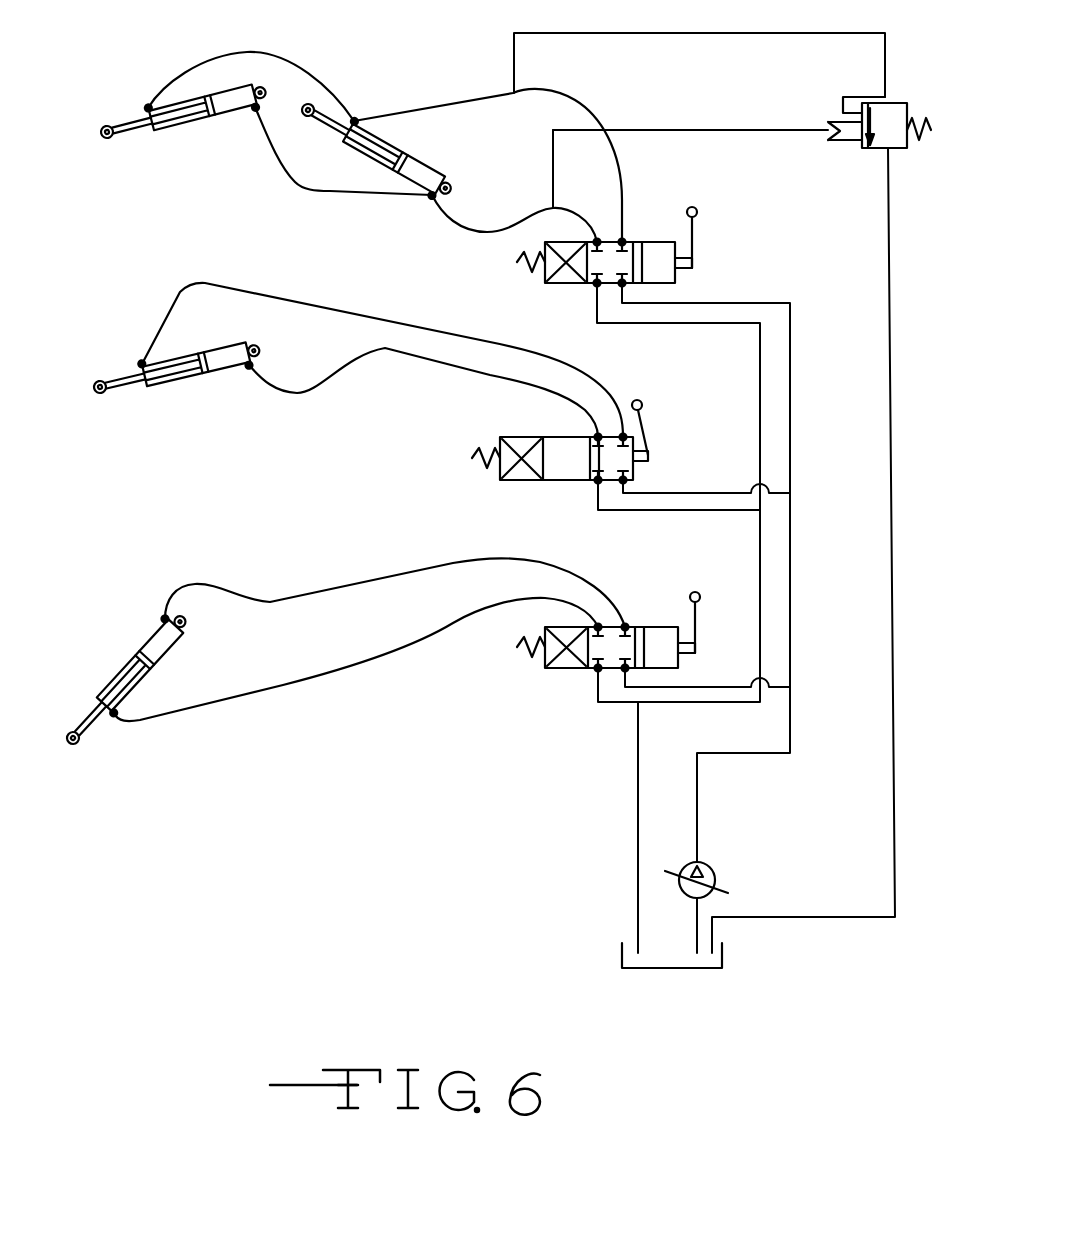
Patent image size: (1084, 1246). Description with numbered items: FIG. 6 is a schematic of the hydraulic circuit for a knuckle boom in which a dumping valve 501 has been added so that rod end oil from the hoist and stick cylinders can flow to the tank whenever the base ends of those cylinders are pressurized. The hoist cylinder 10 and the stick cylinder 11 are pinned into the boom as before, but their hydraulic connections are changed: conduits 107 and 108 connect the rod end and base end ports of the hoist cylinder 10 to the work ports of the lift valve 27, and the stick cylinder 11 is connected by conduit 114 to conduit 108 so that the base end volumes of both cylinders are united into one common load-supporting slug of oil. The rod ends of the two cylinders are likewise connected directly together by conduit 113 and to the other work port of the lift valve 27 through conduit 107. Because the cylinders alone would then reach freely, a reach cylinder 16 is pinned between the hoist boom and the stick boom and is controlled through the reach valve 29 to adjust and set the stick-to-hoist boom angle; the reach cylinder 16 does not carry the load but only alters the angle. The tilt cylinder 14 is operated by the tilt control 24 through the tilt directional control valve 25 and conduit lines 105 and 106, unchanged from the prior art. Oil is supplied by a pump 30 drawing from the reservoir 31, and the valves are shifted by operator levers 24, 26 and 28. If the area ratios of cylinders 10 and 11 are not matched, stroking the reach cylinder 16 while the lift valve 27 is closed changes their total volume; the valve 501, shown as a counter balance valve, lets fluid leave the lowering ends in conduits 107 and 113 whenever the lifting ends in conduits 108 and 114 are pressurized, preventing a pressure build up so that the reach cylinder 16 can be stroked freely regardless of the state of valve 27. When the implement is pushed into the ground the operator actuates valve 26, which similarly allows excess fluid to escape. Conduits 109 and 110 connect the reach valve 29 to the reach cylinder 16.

The hoist cylinder 10 is at (423, 160).
The stick cylinder 11 is at (188, 127).
The tilt cylinder 14 is at (90, 725).
The reach cylinder 16 is at (170, 383).
The tilt control 24 is at (697, 618).
The tilt directional control valve 25 is at (562, 670).
The valve 26 is at (693, 233).
The lift valve 27 is at (558, 287).
The control lever 28 is at (643, 430).
The reach valve 29 is at (513, 480).
The hydraulic pump 30 is at (717, 875).
The reservoir 31 is at (622, 957).
The conduit line 105 is at (320, 592).
The conduit line 106 is at (303, 683).
The conduit 107 is at (577, 103).
The conduit 108 is at (457, 223).
The hydraulic line 109 is at (317, 303).
The hydraulic line 110 is at (503, 387).
The conduit 113 is at (310, 74).
The conduit 114 is at (295, 183).
The valve 501 is at (880, 148).